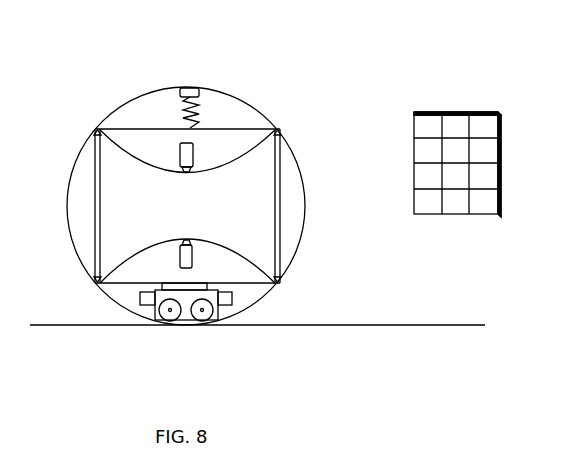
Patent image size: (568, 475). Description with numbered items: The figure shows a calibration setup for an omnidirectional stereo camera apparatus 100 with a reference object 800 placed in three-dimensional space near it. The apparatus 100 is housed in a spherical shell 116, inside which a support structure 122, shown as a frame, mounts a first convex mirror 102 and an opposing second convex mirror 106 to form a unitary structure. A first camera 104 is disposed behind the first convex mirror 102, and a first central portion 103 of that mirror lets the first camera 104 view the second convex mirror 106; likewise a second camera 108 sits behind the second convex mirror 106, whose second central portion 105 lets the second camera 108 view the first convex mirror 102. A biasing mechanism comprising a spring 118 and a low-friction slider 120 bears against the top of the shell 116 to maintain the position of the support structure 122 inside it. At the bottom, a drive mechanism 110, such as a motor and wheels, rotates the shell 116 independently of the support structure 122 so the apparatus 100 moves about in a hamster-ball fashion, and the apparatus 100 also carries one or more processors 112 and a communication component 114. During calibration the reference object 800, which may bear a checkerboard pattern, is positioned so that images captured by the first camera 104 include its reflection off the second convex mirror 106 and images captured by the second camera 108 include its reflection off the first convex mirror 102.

The omnidirectional stereo camera apparatus 100 is at (266, 56).
The first convex mirror 102 is at (216, 167).
The first central portion 103 is at (180, 171).
The first camera 104 is at (180, 160).
The second central portion 105 is at (186, 241).
The second convex mirror 106 is at (228, 252).
The second camera 108 is at (192, 255).
The drive mechanism 110 is at (177, 325).
The processors 112 is at (232, 300).
The communication component 114 is at (140, 298).
The spherical shell 116 is at (259, 108).
The spring 118 is at (188, 106).
The slider 120 is at (180, 90).
The support structure 122 is at (280, 195).
The reference object 800 is at (500, 113).